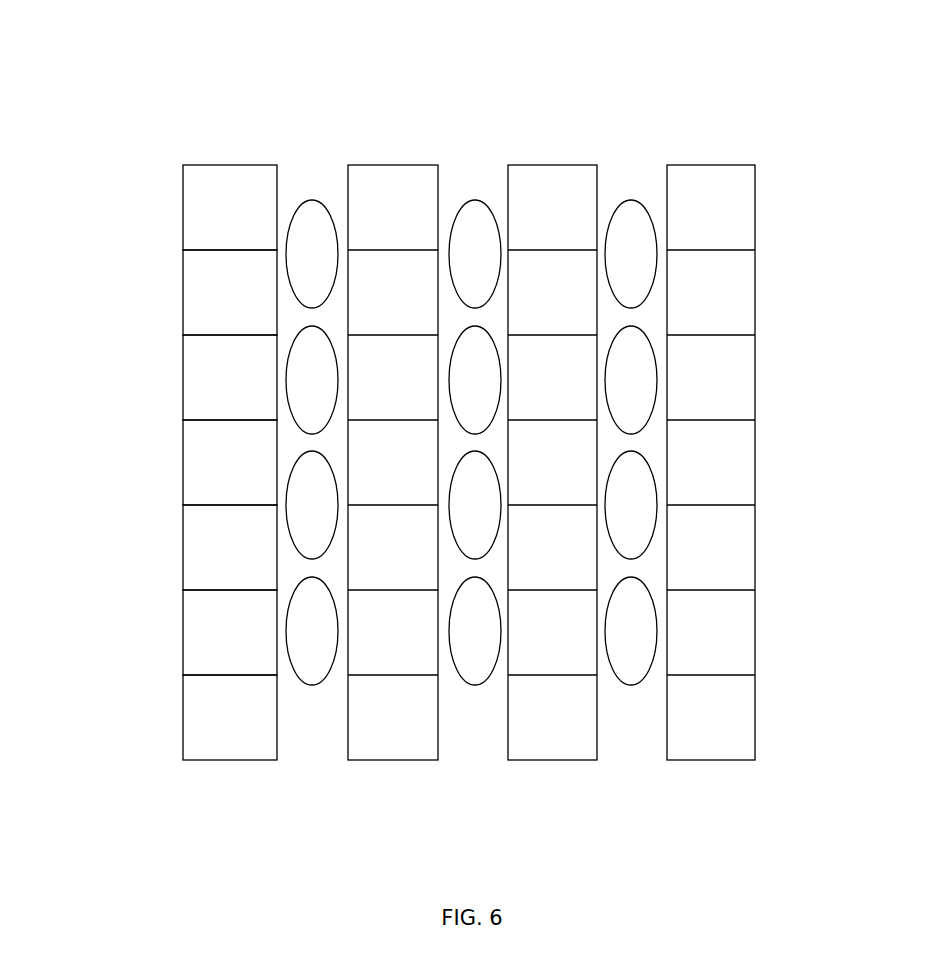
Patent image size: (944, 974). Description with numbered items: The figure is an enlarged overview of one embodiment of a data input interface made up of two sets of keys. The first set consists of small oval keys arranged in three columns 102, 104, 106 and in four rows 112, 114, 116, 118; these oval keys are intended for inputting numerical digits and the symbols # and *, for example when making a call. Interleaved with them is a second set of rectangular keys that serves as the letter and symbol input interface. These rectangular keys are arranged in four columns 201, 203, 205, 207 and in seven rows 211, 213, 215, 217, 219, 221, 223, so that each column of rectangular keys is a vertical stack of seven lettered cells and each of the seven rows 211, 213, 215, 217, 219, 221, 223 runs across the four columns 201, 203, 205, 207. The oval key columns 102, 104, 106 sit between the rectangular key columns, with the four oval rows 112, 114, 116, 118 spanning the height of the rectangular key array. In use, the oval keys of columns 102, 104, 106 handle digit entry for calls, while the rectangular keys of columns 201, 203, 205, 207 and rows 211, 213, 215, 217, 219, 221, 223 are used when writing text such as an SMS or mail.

The first column of rectangular keys 201 is at (212, 118).
The second column of rectangular keys 203 is at (391, 118).
The third column of rectangular keys 205 is at (541, 118).
The fourth column of rectangular keys 207 is at (703, 118).
The first row of rectangular keys 211 is at (160, 201).
The second row of rectangular keys 213 is at (160, 292).
The third row of rectangular keys 215 is at (160, 377).
The fourth row of rectangular keys 217 is at (160, 467).
The fifth row of rectangular keys 219 is at (160, 541).
The sixth row of rectangular keys 221 is at (160, 627).
The seventh row of rectangular keys 223 is at (160, 720).
The first column of oval keys 102 is at (313, 700).
The second column of oval keys 104 is at (473, 700).
The third column of oval keys 106 is at (632, 697).
The first row of oval keys 112 is at (668, 257).
The second row of oval keys 114 is at (668, 362).
The third row of oval keys 116 is at (668, 488).
The fourth row of oval keys 118 is at (668, 612).